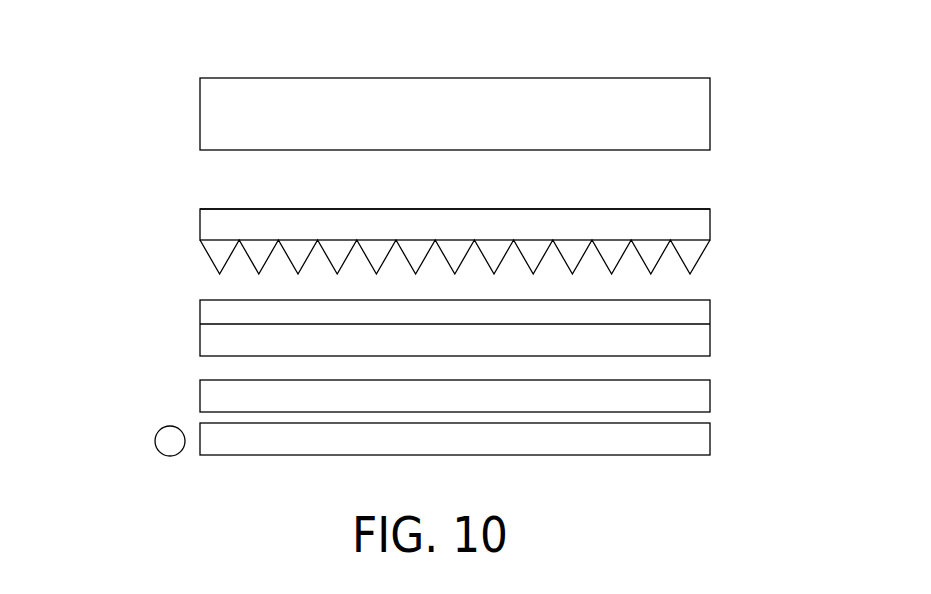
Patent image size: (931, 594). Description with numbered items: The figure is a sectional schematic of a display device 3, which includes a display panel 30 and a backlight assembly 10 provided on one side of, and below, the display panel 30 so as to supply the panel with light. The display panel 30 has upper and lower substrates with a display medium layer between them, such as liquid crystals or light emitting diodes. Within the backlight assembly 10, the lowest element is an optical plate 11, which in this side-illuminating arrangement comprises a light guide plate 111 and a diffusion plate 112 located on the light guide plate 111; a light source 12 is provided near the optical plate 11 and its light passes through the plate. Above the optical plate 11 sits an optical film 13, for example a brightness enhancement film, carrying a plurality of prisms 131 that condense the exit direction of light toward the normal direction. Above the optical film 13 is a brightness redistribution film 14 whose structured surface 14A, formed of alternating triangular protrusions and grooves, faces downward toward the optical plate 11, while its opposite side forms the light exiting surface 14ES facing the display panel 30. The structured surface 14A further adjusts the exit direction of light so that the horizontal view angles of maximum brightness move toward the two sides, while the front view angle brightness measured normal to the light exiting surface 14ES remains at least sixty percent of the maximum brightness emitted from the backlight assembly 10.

The display device 3 is at (52, 34).
The display panel 30 is at (215, 124).
The backlight assembly 10 is at (65, 208).
The brightness redistribution film 14 is at (446, 222).
The structured surface 14A is at (197, 253).
The light exiting surface 14ES is at (678, 209).
The optical film 13 is at (408, 327).
The prisms 131 is at (215, 314).
The optical plate 11 is at (121, 360).
The diffusion plate 112 is at (214, 397).
The light guide plate 111 is at (212, 440).
The light source 12 is at (167, 441).